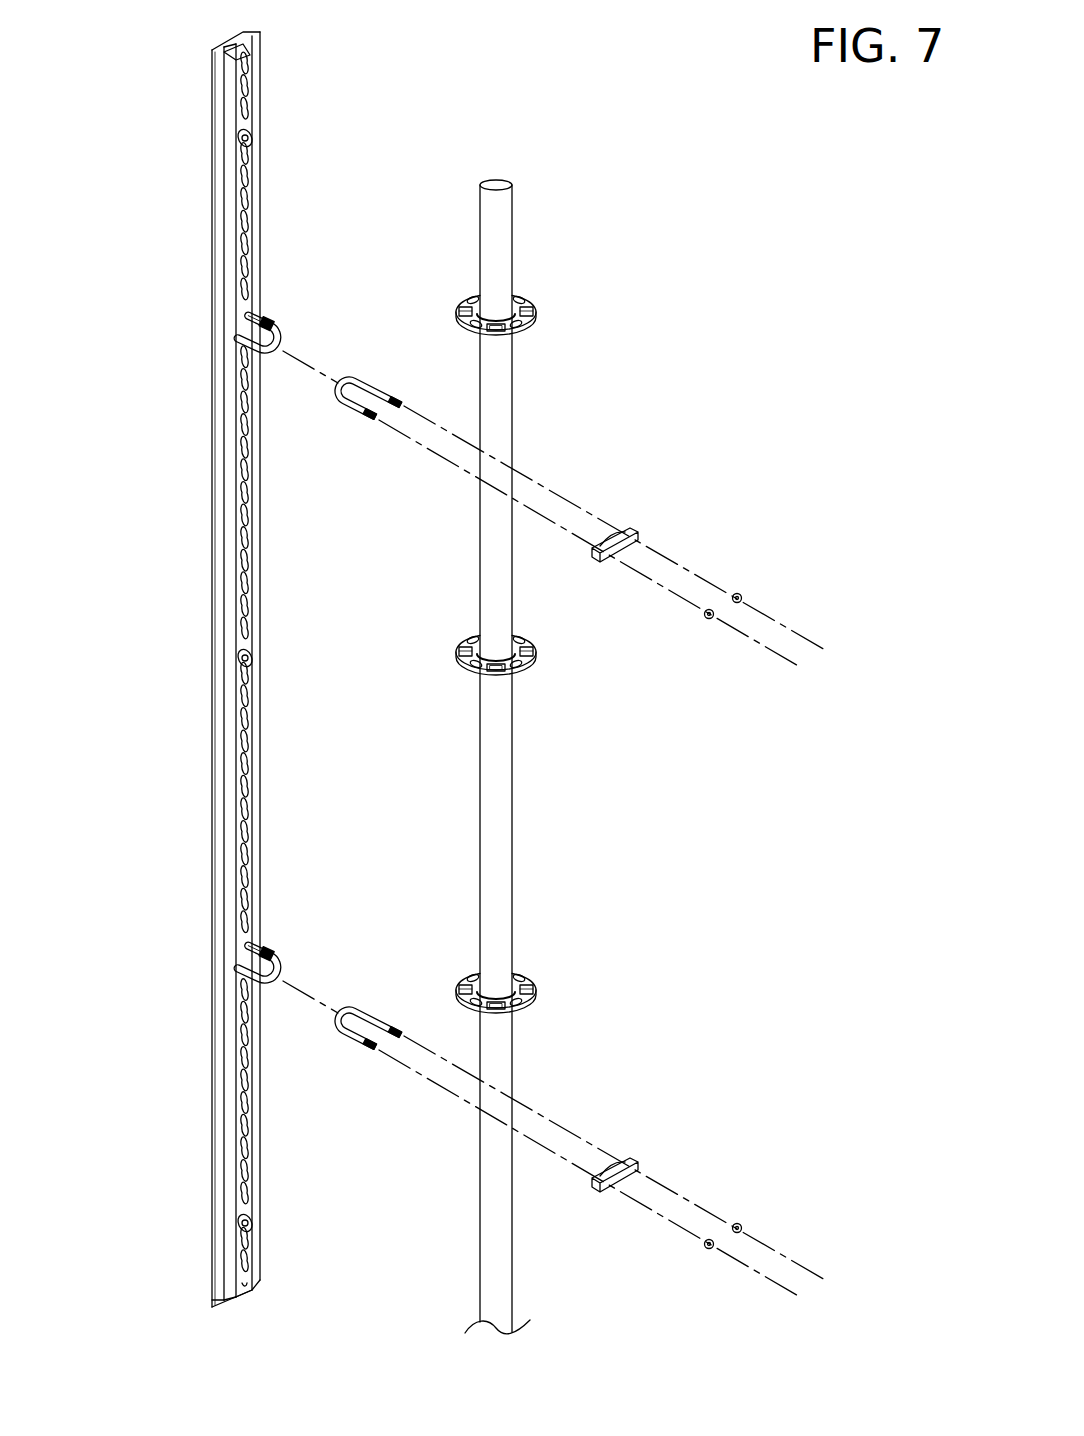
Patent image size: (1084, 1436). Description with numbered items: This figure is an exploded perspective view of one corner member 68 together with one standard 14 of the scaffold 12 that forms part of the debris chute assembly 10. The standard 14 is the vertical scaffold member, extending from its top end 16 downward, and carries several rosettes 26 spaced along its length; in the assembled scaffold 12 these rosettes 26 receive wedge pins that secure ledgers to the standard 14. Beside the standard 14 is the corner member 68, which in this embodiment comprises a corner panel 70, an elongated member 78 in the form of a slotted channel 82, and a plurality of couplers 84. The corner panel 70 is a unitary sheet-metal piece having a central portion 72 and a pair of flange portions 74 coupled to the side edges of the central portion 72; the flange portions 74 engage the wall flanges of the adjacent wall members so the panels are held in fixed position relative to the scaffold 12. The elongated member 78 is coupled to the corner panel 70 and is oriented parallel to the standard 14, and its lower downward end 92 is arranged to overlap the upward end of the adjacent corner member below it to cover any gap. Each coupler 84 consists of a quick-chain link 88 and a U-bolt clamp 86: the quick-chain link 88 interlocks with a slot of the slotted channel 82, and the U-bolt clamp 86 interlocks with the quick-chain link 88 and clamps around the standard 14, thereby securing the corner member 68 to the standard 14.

The debris chute assembly 10 is at (605, 112).
The scaffold 12 is at (570, 180).
The standard 14 is at (510, 400).
The top end 16 is at (497, 185).
The rosette 26 is at (526, 306).
The corner member 68 is at (326, 38).
The corner panel 70 is at (180, 178).
The central portion 72 is at (222, 49).
The flange portion 74 is at (213, 86).
The elongated member 78 is at (275, 227).
The slotted channel 82 is at (232, 432).
The coupler 84 is at (306, 335).
The U-bolt clamp 86 is at (350, 408).
The quick-chain link 88 is at (274, 358).
The downward end 92 is at (215, 1294).